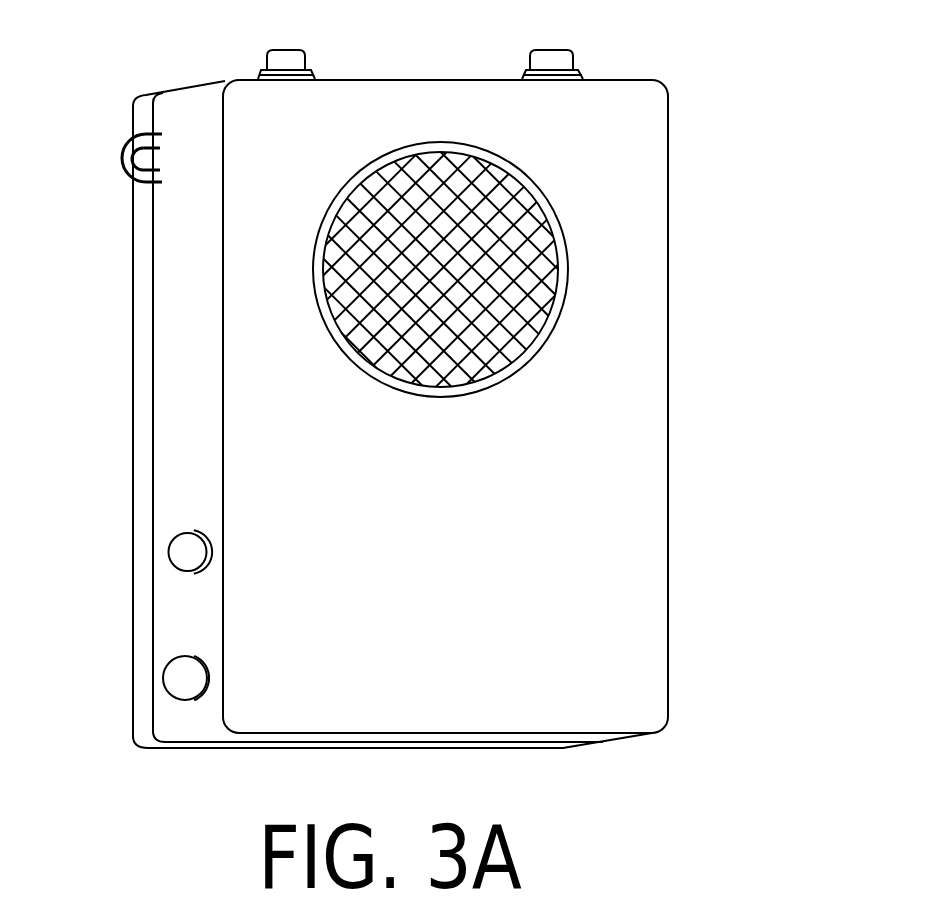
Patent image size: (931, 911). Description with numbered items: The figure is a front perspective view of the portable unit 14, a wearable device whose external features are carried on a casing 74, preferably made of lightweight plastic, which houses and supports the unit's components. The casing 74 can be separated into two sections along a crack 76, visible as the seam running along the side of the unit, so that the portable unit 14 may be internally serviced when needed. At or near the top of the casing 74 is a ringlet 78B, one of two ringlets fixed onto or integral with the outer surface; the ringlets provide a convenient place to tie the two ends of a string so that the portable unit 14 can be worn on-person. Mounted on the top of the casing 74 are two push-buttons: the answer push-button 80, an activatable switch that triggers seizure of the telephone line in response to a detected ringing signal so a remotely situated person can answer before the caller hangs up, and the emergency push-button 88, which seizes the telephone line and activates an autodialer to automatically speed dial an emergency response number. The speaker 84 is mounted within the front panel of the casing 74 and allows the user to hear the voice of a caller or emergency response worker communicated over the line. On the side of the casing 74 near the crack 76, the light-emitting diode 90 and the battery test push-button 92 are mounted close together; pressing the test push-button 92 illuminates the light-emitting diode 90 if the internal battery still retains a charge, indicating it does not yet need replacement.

The portable unit 14 is at (744, 100).
The casing 74 is at (132, 266).
The crack 76 is at (152, 358).
The ringlet 78B is at (118, 158).
The answer push-button 80 is at (285, 50).
The speaker 84 is at (523, 365).
The emergency push-button 88 is at (552, 49).
The light-emitting diode 90 is at (167, 552).
The battery test push-button 92 is at (162, 676).